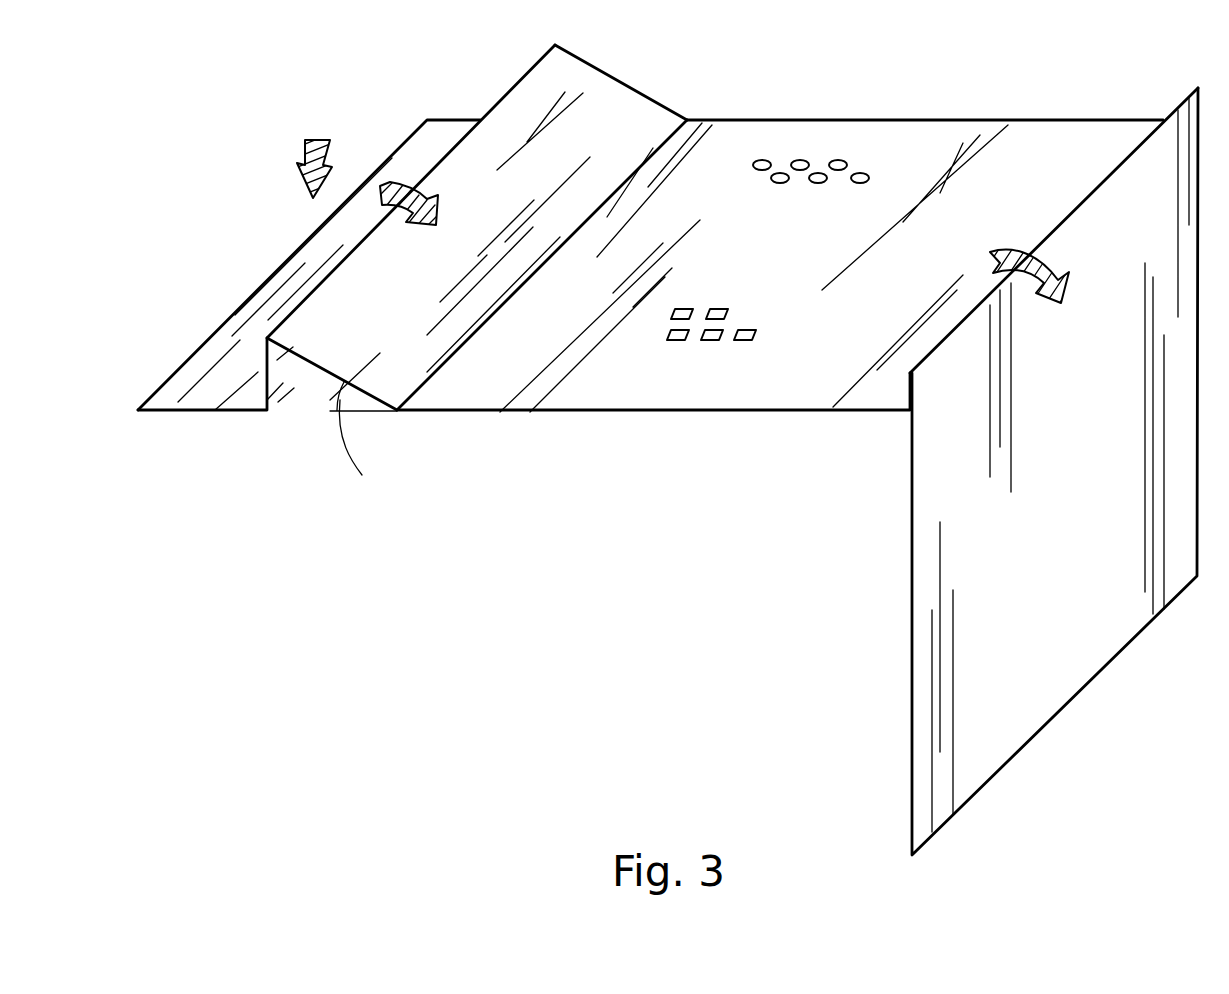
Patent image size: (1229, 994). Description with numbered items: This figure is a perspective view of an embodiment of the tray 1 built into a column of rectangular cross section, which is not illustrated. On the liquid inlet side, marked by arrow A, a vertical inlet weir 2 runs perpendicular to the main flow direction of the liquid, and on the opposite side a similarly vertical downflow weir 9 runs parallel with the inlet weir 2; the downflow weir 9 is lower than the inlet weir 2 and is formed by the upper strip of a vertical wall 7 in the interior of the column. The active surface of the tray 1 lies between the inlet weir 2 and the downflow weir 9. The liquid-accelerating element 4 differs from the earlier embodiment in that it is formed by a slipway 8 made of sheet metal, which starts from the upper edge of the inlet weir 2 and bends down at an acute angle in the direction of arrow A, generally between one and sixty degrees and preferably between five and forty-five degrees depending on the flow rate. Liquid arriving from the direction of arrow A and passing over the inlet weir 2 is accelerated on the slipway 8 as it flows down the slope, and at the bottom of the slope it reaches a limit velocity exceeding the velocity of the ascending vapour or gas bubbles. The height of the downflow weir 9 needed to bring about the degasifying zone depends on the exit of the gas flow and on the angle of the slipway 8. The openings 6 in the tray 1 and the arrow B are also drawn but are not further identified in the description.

The sheet metal plate 1 is at (522, 432).
The edge flange with web 2 is at (283, 378).
The inclined panel 4 is at (642, 88).
The openings 6 is at (860, 172).
The side flange 7 is at (912, 548).
The upper bend edge of inclined panel 8 is at (573, 80).
The bend line between plate and side flange 9 is at (928, 355).
The folding direction arrow A is at (415, 192).
The folding direction arrow B is at (1036, 258).